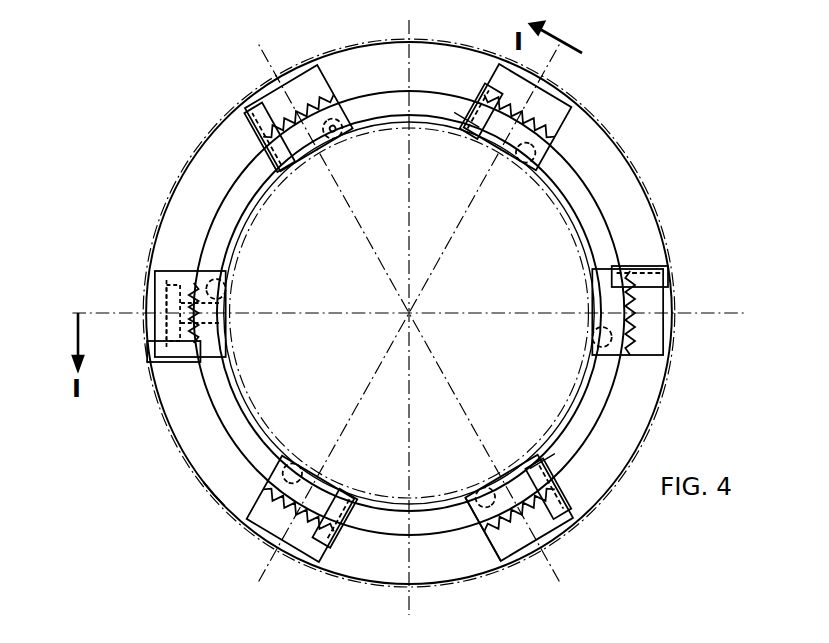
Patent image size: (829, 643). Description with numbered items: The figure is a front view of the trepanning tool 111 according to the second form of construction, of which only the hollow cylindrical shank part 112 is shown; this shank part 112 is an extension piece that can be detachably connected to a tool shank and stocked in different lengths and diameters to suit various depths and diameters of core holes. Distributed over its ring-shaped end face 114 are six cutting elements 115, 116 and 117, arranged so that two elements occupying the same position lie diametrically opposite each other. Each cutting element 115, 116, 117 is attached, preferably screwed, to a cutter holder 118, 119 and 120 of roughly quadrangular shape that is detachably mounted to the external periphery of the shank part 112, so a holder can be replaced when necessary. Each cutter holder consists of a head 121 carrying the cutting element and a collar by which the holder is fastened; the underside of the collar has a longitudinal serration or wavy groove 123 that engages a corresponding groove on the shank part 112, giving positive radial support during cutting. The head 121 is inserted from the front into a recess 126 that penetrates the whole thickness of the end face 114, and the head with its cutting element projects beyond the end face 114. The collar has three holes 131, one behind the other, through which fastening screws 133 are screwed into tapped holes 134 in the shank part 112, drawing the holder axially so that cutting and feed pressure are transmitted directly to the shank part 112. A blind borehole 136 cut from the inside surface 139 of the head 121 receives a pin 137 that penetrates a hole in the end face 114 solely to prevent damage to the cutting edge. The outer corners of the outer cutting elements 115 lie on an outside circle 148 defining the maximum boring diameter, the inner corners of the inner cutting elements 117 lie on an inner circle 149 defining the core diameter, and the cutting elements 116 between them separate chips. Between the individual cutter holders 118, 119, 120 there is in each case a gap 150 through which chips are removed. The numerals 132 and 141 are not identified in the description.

The trepanning tool 111 is at (140, 449).
The hollow cylindrical shank part 112 is at (628, 204).
The ring-shaped end face 114 is at (600, 242).
The outer cutting element 115 is at (664, 279).
The cutting element 116 is at (250, 118).
The inner cutting element 117 is at (490, 105).
The cutter holder 118 is at (647, 337).
The cutter holder 119 is at (303, 90).
The cutter holder 120 is at (262, 516).
The head 121 is at (560, 112).
The wavy groove 123 is at (552, 142).
The recess 126 is at (343, 108).
The holes 131 is at (200, 284).
The guide bore 132 is at (155, 283).
The fastening screws 133 is at (158, 302).
The tapped holes 134 is at (208, 328).
The blind borehole 136 is at (590, 333).
The pin 137 is at (333, 143).
The inside surface 139 is at (495, 145).
The plate 141 is at (637, 283).
The outside circle 148 is at (200, 492).
The inner circle 149 is at (250, 400).
The gap 150 is at (190, 183).